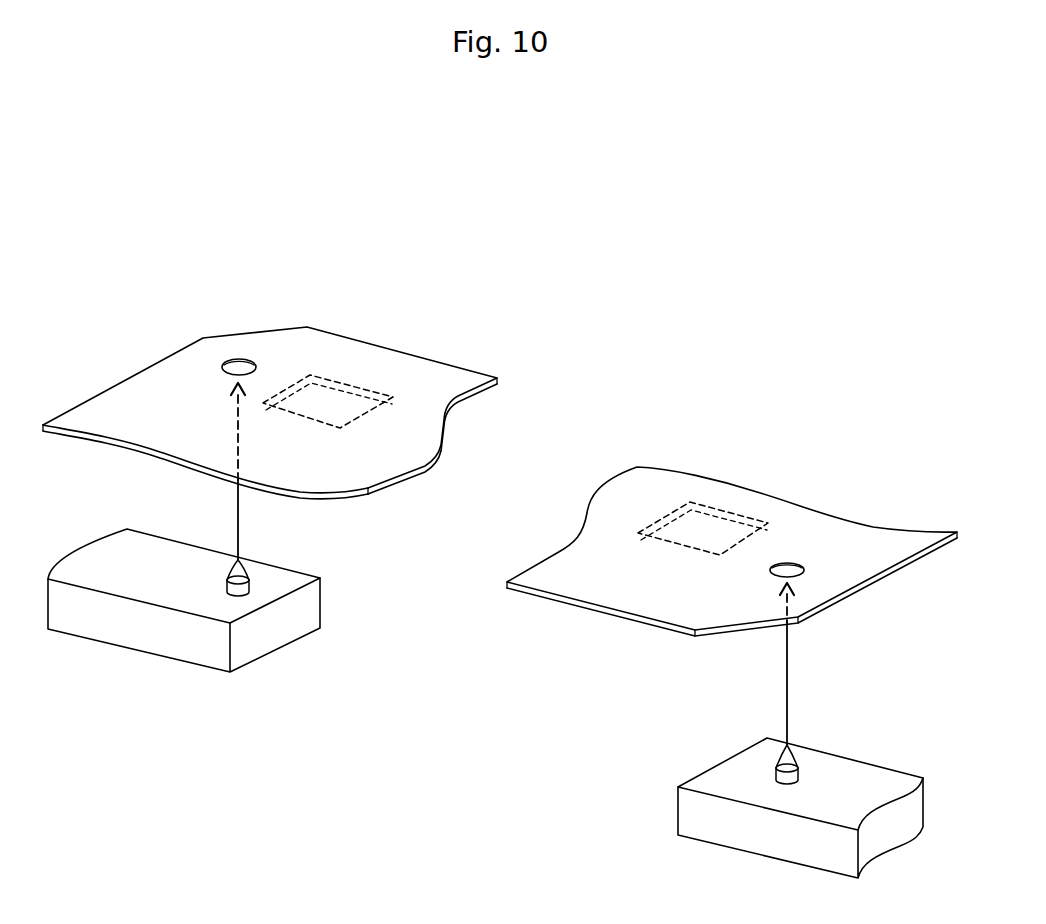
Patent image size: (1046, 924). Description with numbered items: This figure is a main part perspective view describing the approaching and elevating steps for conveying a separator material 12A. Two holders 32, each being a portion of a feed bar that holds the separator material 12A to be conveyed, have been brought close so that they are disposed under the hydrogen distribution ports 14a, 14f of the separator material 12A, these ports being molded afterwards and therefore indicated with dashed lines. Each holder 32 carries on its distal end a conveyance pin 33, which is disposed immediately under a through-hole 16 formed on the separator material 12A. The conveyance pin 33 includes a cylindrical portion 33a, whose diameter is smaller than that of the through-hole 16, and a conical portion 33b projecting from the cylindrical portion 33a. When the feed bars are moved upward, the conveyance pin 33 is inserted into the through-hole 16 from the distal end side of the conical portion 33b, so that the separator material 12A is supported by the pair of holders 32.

The separator material 12A is at (462, 386).
The hydrogen distribution port 14a is at (330, 398).
The hydrogen distribution port 14f is at (705, 525).
The through-hole 16 is at (237, 366).
The holder 32 is at (283, 632).
The conveyance pin 33 is at (518, 648).
The cylindrical portion 33a is at (255, 583).
The conical portion 33b is at (245, 568).